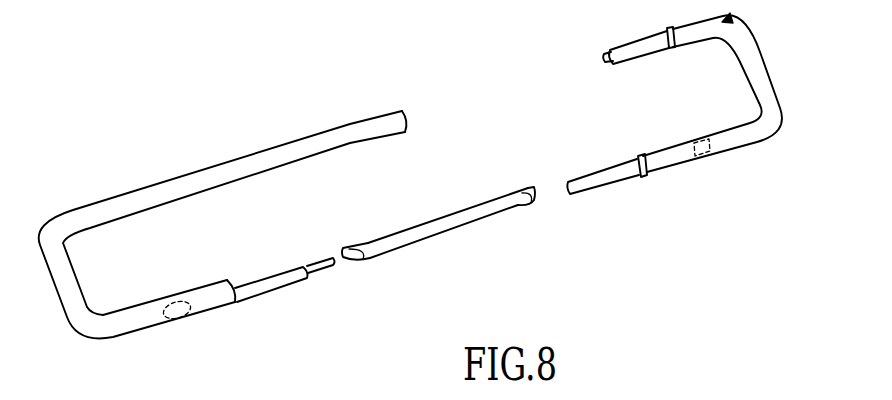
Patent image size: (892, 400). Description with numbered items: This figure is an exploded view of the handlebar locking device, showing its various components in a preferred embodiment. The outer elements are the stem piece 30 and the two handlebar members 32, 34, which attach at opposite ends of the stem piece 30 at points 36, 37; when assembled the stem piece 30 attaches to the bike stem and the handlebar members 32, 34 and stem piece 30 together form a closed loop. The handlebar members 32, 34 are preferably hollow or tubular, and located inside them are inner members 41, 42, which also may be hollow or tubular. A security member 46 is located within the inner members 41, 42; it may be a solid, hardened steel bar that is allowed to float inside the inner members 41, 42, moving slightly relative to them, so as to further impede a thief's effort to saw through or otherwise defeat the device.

The stem piece 30 is at (437, 222).
The handlebar member 32 is at (63, 285).
The handlebar member 34 is at (760, 73).
The point 36 is at (358, 259).
The point 37 is at (527, 208).
The inner member 41 is at (258, 282).
The inner member 42 is at (595, 175).
The security member 46 is at (315, 263).